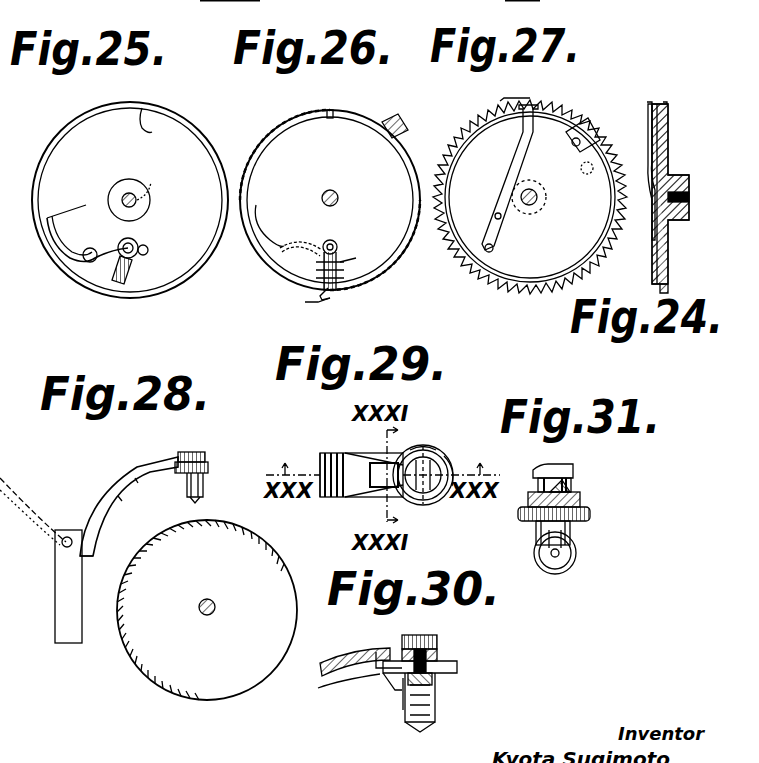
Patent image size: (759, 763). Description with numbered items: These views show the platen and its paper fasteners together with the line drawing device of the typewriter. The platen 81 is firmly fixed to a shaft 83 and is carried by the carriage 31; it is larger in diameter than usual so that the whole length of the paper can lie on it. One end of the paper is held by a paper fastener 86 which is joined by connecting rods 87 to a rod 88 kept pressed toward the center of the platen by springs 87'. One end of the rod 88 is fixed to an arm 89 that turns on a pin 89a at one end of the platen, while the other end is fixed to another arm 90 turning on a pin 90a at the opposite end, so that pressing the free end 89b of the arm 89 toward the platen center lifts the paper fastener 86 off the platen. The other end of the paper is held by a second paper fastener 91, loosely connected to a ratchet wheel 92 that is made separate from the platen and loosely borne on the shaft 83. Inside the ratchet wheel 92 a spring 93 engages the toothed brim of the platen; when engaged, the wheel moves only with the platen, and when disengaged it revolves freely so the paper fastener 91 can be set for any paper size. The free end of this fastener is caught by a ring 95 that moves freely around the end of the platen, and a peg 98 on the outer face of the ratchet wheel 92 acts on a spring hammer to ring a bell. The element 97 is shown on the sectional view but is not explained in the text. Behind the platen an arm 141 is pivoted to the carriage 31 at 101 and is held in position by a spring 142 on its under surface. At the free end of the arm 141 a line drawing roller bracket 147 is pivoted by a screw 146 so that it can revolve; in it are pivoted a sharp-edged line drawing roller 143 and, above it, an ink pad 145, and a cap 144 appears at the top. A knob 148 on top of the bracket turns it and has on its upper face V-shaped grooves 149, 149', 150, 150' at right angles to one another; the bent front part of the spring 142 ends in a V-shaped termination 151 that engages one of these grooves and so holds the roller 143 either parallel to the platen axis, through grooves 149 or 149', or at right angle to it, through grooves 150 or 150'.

In FIG. 28, the carriage 31 is at (70, 590).
In FIG. 26, the platen 81 is at (262, 125).
In FIG. 28, the platen 81 is at (207, 610).
In FIG. 25, the shaft 83 is at (137, 198).
In FIG. 26, the shaft 83 is at (342, 184).
In FIG. 27, the shaft 83 is at (535, 203).
In FIG. 28, the shaft 83 is at (214, 604).
In FIG. 26, the paper fastener 86 is at (305, 302).
In FIG. 26, the connecting rods 87 is at (349, 255).
In FIG. 26, the springs 87' is at (364, 253).
In FIG. 25, the rod 88 is at (138, 252).
In FIG. 26, the rod 88 is at (334, 242).
In FIG. 25, the arm 89 is at (110, 250).
In FIG. 25, the pin 89a is at (112, 242).
In FIG. 25, the free end 89b is at (69, 201).
In FIG. 26, the arm 90 is at (296, 248).
In FIG. 26, the pin 90a is at (278, 219).
In FIG. 26, the paper fastener 91 is at (400, 108).
In FIG. 27, the paper fastener 91 is at (592, 126).
In FIG. 24, the ratchet wheel 92 is at (676, 140).
In FIG. 27, the spring 93 is at (503, 132).
In FIG. 24, the spring 93 is at (650, 104).
In FIG. 25, the ring 95 is at (158, 127).
In FIG. 27, the lever 97 is at (552, 88).
In FIG. 24, the lever 97 is at (658, 104).
In FIG. 27, the peg 98 is at (567, 167).
In FIG. 28, the pivot 101 is at (98, 500).
In FIG. 28, the arm 141 is at (143, 458).
In FIG. 29, the arm 141 is at (345, 490).
In FIG. 30, the arm 141 is at (352, 644).
In FIG. 31, the arm 141 is at (566, 490).
In FIG. 28, the spring 142 is at (100, 540).
In FIG. 29, the spring 142 is at (325, 453).
In FIG. 30, the spring 142 is at (325, 686).
In FIG. 28, the line drawing roller 143 is at (192, 502).
In FIG. 30, the line drawing roller 143 is at (425, 728).
In FIG. 31, the line drawing roller 143 is at (574, 548).
In FIG. 28, the cap 144 is at (192, 452).
In FIG. 30, the cap 144 is at (415, 635).
In FIG. 31, the cap 144 is at (540, 466).
In FIG. 30, the ink pad 145 is at (403, 705).
In FIG. 31, the ink pad 145 is at (570, 530).
In FIG. 30, the screw 146 is at (437, 655).
In FIG. 28, the line drawing roller bracket 147 is at (204, 480).
In FIG. 30, the line drawing roller bracket 147 is at (435, 700).
In FIG. 31, the line drawing roller bracket 147 is at (562, 566).
In FIG. 28, the knob 148 is at (208, 466).
In FIG. 29, the knob 148 is at (440, 497).
In FIG. 30, the knob 148 is at (432, 680).
In FIG. 31, the knob 148 is at (580, 500).
In FIG. 30, the V-shaped groove 149 is at (374, 691).
In FIG. 31, the V-shaped groove 149 is at (582, 521).
In FIG. 29, the V-shaped groove 149' is at (472, 456).
In FIG. 30, the V-shaped groove 149' is at (451, 665).
In FIG. 29, the V-shaped groove 150 is at (443, 502).
In FIG. 29, the V-shaped groove 150' is at (443, 430).
In FIG. 29, the V-shaped termination 151 is at (384, 463).
In FIG. 30, the V-shaped termination 151 is at (380, 655).
In FIG. 31, the V-shaped termination 151 is at (566, 480).